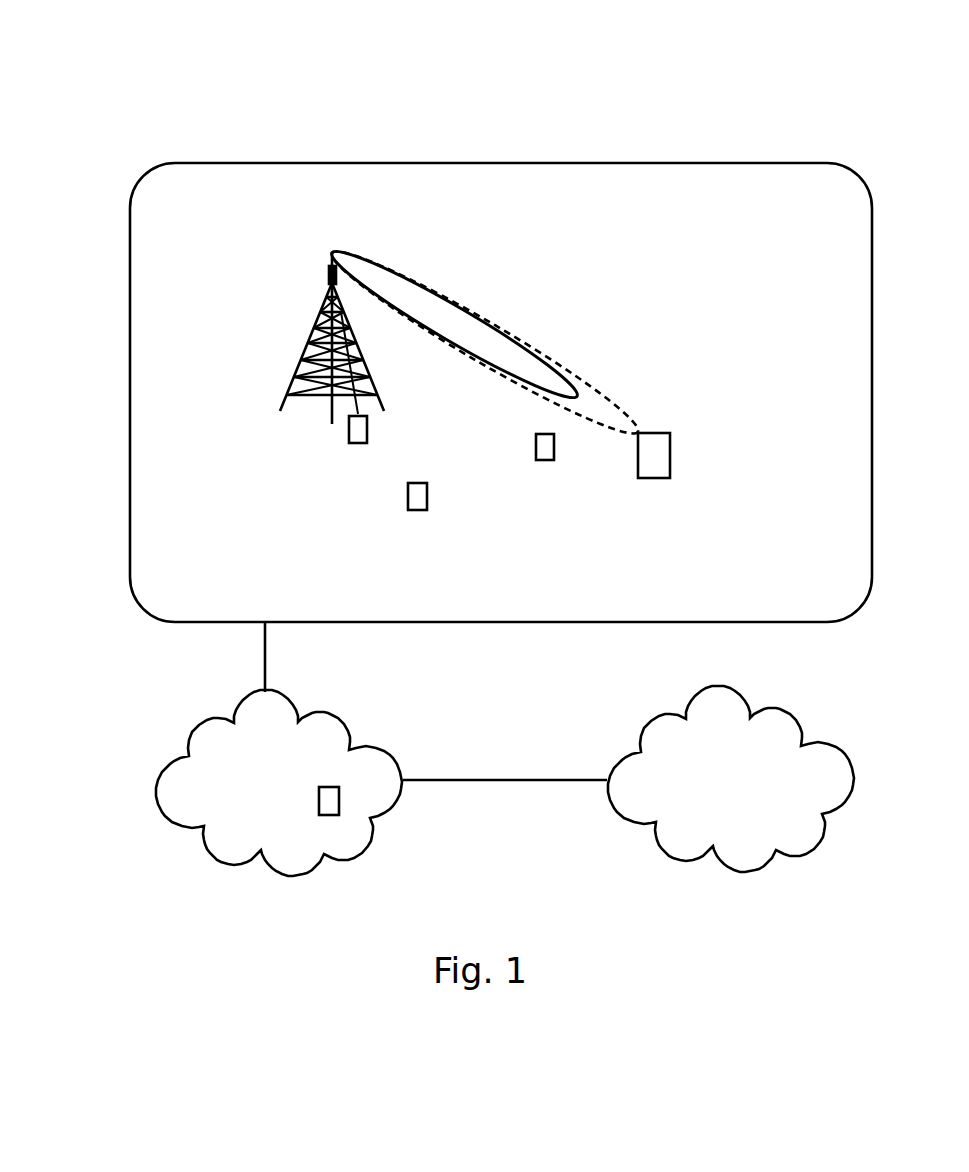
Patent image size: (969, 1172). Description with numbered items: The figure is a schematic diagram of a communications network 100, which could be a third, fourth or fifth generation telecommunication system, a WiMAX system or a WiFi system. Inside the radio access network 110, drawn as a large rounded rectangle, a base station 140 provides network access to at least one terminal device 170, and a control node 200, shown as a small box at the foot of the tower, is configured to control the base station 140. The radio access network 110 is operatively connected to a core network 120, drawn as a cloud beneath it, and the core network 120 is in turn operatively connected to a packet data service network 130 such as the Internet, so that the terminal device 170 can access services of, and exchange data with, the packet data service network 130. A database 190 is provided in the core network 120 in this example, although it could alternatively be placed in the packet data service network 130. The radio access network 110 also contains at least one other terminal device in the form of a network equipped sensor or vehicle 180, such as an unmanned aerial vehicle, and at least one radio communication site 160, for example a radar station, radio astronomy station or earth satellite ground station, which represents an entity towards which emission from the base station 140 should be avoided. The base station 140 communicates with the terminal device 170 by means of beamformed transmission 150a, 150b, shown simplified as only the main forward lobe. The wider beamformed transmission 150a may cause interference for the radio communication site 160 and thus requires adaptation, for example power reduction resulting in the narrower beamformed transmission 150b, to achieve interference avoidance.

The communications network 100 is at (222, 105).
The radio access network 110 is at (130, 437).
The core network 120 is at (277, 778).
The packet data service network 130 is at (761, 801).
The base station 140 is at (330, 256).
The beamformed transmission 150a is at (618, 403).
The beamformed transmission 150b is at (566, 373).
The radio communication site 160 is at (655, 478).
The terminal device 170 is at (535, 447).
The other terminal device (sensor or vehicle) 180 is at (408, 500).
The database 190 is at (319, 802).
The control node 200 is at (349, 430).